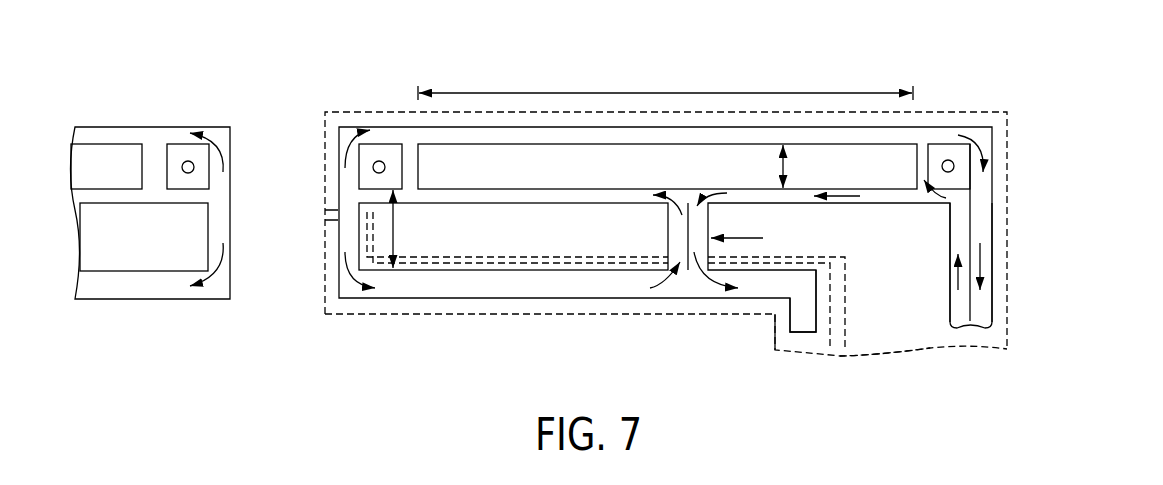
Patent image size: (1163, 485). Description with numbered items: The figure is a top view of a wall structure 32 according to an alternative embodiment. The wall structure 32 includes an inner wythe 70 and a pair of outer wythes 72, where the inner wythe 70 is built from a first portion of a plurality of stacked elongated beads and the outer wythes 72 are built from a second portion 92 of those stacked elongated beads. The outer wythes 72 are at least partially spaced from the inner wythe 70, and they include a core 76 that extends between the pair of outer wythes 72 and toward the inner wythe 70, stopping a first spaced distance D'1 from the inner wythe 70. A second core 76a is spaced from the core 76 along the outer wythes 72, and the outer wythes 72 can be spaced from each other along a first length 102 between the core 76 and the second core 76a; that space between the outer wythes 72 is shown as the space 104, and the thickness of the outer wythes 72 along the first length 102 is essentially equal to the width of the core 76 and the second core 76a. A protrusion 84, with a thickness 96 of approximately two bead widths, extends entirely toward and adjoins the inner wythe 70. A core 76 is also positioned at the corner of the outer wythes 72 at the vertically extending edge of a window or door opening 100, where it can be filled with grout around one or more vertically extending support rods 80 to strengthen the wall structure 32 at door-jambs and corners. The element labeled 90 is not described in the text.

The window or door opening 100 is at (273, 130).
The core 76 is at (177, 155).
The vertically extending support rod 80 is at (378, 160).
The second core 76a is at (960, 158).
The wall structure 32 is at (1078, 135).
The first length 102 is at (668, 92).
The space 104 is at (788, 168).
The first spaced distance D'1 is at (428, 229).
The thickness 96 is at (666, 238).
The protrusion 84 is at (672, 213).
The channel portion 90 is at (773, 322).
The inner wythe 70 is at (803, 312).
The second portion 92 is at (928, 348).
The outer wythes 72 is at (980, 315).